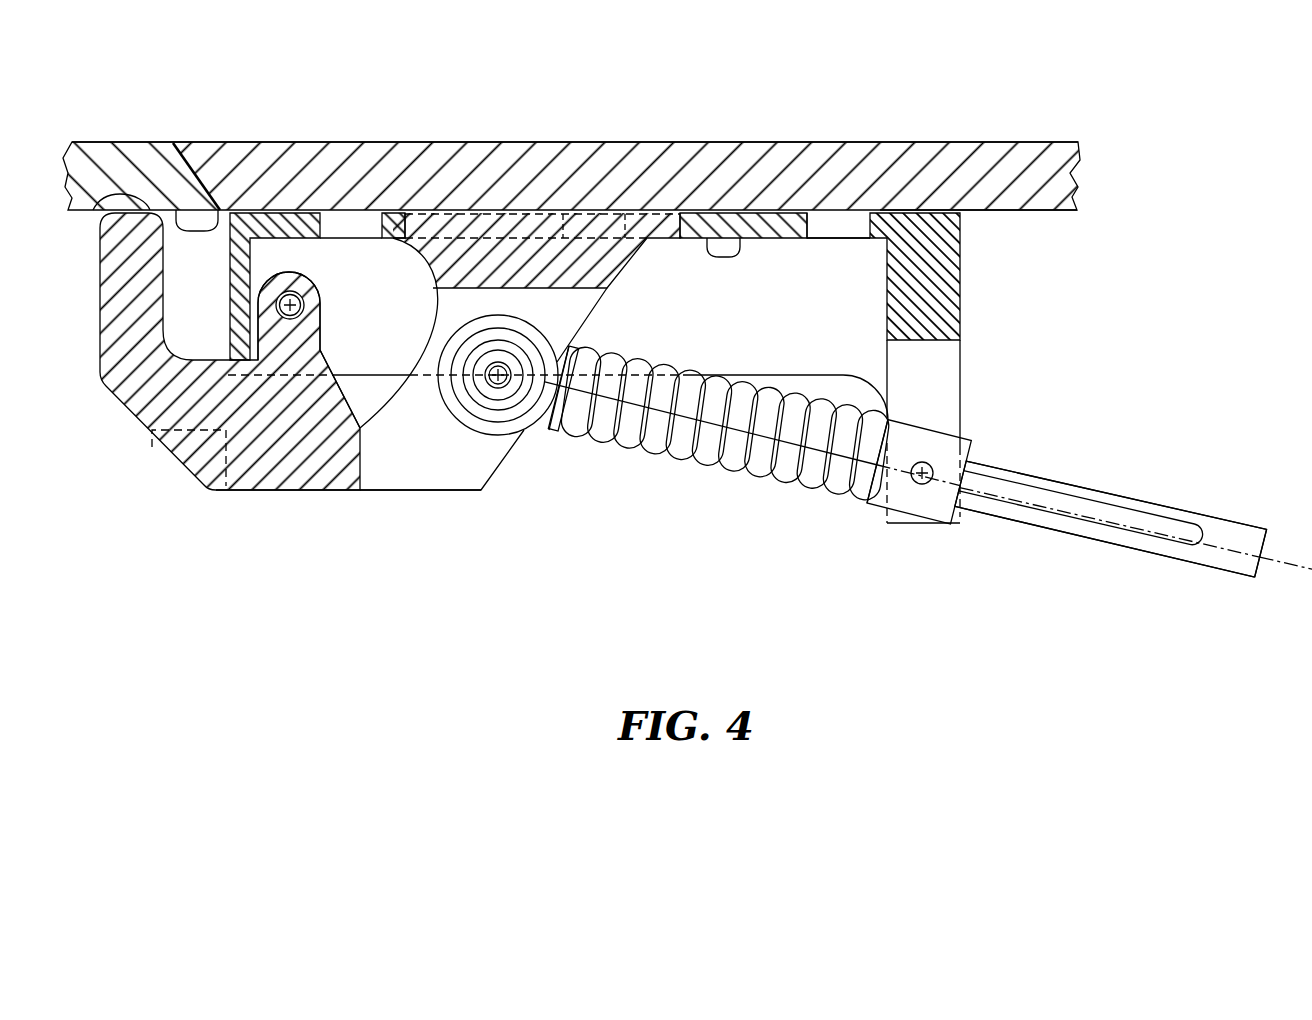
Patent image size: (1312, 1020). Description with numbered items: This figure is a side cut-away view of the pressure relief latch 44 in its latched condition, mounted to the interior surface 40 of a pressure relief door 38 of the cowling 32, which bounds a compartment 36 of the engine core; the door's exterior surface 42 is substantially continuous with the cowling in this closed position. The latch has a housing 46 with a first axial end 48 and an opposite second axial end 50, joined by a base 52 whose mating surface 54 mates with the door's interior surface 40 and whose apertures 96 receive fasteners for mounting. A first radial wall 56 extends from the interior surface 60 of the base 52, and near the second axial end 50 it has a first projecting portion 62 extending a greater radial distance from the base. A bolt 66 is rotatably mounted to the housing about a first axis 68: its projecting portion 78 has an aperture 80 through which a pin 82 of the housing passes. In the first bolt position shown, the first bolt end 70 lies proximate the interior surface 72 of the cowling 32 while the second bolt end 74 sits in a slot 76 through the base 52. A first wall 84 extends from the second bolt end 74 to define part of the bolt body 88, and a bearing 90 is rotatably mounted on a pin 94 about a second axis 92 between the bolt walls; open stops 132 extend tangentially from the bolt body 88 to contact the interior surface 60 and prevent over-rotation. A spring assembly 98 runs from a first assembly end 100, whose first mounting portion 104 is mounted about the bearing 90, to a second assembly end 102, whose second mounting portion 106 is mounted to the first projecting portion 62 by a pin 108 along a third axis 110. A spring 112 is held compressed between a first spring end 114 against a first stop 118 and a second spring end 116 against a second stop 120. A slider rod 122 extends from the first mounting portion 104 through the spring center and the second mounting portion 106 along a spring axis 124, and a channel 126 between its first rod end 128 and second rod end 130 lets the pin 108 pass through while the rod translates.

The cowling 32 is at (571, 176).
The compartment 36 is at (493, 558).
The pressure relief door 38 is at (626, 176).
The interior surface 40 is at (1014, 211).
The exterior surface 42 is at (930, 142).
The pressure relief latch 44 is at (913, 630).
The housing 46 is at (978, 290).
The first axial end 48 is at (227, 300).
The second axial end 50 is at (965, 366).
The base 52 is at (772, 211).
The mating surface 54 is at (790, 212).
The first radial wall 56 is at (789, 344).
The interior surface 60 is at (733, 211).
The first projecting portion 62 is at (933, 400).
The bolt 66 is at (272, 512).
The first axis 68 is at (290, 321).
The first bolt end 70 is at (104, 207).
The interior surface 72 is at (231, 208).
The second bolt end 74 is at (477, 210).
The slot 76 is at (405, 209).
The projecting portion 78 is at (300, 345).
The aperture 80 is at (307, 319).
The pin 82 is at (303, 297).
The first wall 84 is at (483, 389).
The bolt body 88 is at (322, 492).
The bearing 90 is at (507, 393).
The second axis 92 is at (502, 371).
The pin 94 is at (496, 388).
The apertures 96 is at (345, 222).
The spring assembly 98 is at (750, 532).
The first assembly end 100 is at (446, 334).
The second assembly end 102 is at (962, 533).
The first mounting portion 104 is at (508, 318).
The second mounting portion 106 is at (970, 445).
The pin 108 is at (914, 482).
The third axis 110 is at (931, 484).
The spring 112 is at (710, 458).
The first spring end 114 is at (583, 366).
The second spring end 116 is at (868, 492).
The first stop 118 is at (573, 407).
The second stop 120 is at (876, 490).
The slider rod 122 is at (1237, 560).
The spring axis 124 is at (1308, 602).
The channel 126 is at (1160, 540).
The first rod end 128 is at (583, 383).
The second rod end 130 is at (1268, 520).
The open stops 132 is at (200, 458).